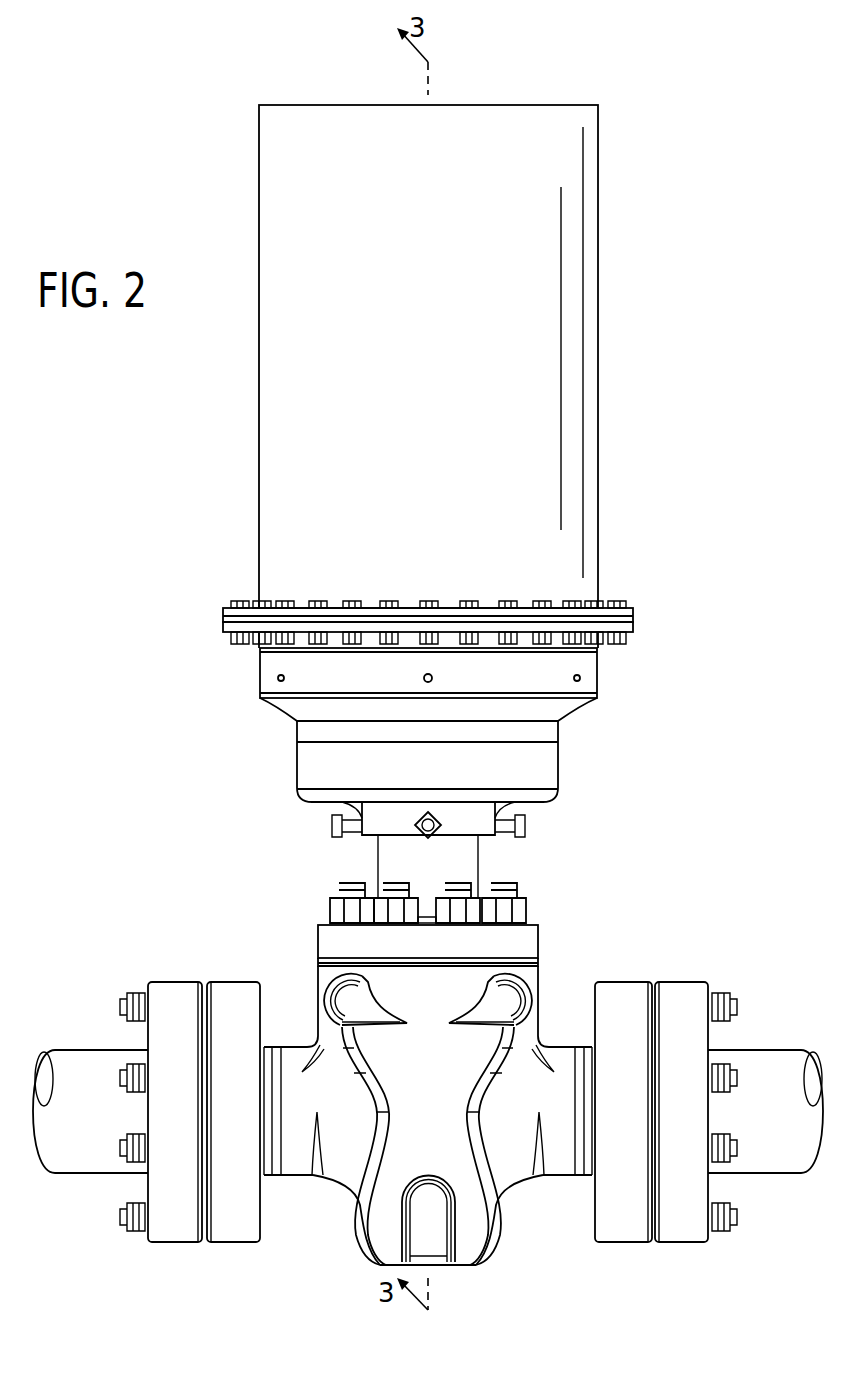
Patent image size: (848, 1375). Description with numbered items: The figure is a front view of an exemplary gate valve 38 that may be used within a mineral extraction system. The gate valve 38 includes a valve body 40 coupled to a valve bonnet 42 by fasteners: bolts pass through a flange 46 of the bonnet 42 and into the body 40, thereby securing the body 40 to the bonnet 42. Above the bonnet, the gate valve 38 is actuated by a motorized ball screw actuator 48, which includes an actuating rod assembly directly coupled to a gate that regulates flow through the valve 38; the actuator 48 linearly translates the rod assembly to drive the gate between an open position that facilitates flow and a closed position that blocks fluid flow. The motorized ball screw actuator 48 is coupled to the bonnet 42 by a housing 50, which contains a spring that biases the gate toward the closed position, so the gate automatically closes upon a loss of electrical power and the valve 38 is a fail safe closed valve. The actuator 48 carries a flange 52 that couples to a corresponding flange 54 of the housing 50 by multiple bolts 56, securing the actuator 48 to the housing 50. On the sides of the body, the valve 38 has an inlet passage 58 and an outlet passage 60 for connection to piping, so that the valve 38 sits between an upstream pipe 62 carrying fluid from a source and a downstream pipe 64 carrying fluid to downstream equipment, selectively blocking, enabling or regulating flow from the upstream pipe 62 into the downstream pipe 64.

The gate valve 38 is at (709, 784).
The valve body 40 is at (537, 980).
The valve bonnet 42 is at (334, 912).
The flange 46 is at (538, 940).
The motorized ball screw actuator 48 is at (598, 197).
The housing 50 is at (580, 711).
The flange 52 is at (634, 611).
The flange 54 is at (634, 626).
The bolts 56 is at (234, 601).
The inlet passage 58 is at (232, 982).
The outlet passage 60 is at (623, 982).
The upstream pipe 62 is at (92, 1050).
The downstream pipe 64 is at (768, 1050).